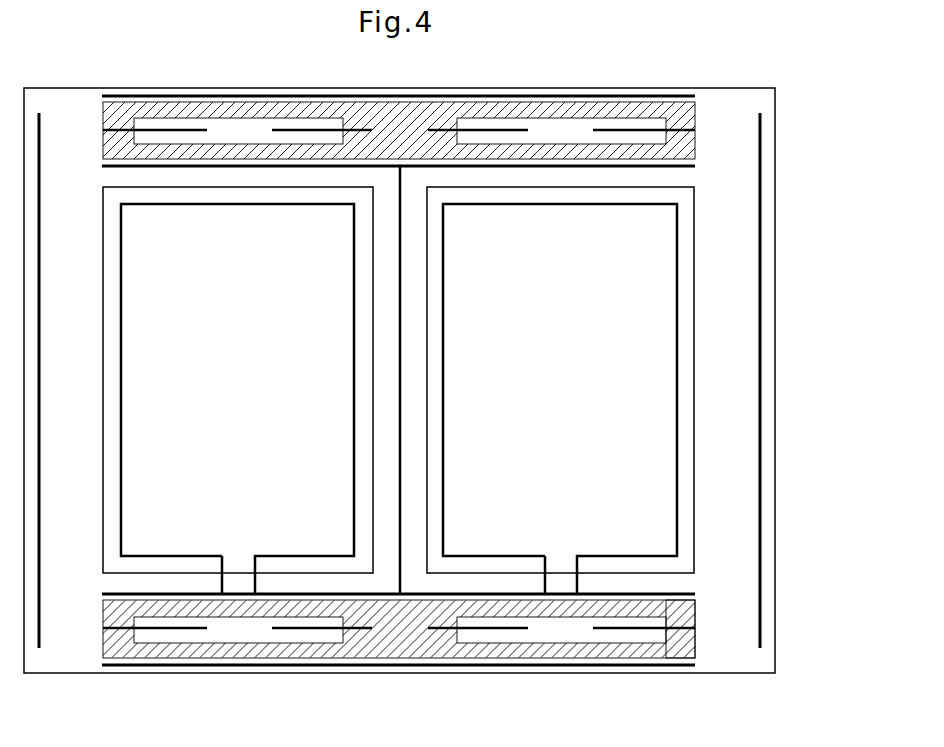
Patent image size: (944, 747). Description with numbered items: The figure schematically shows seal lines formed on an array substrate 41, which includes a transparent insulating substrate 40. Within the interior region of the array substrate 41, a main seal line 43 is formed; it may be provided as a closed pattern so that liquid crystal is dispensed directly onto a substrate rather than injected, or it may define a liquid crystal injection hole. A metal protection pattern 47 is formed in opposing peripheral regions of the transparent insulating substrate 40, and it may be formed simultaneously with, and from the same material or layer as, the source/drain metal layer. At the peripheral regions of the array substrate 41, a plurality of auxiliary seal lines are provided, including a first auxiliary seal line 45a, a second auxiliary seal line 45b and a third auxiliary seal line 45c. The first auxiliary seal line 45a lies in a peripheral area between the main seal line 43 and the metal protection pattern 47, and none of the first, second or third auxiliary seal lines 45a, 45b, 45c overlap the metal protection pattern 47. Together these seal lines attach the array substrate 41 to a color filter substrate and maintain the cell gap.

The transparent insulating substrate 40 is at (775, 613).
The array substrate 41 is at (695, 326).
The main seal line 43 is at (678, 446).
The first auxiliary seal line 45a is at (677, 596).
The second auxiliary seal line 45b is at (628, 630).
The third auxiliary seal line 45c is at (563, 667).
The metal protection pattern 47 is at (690, 624).